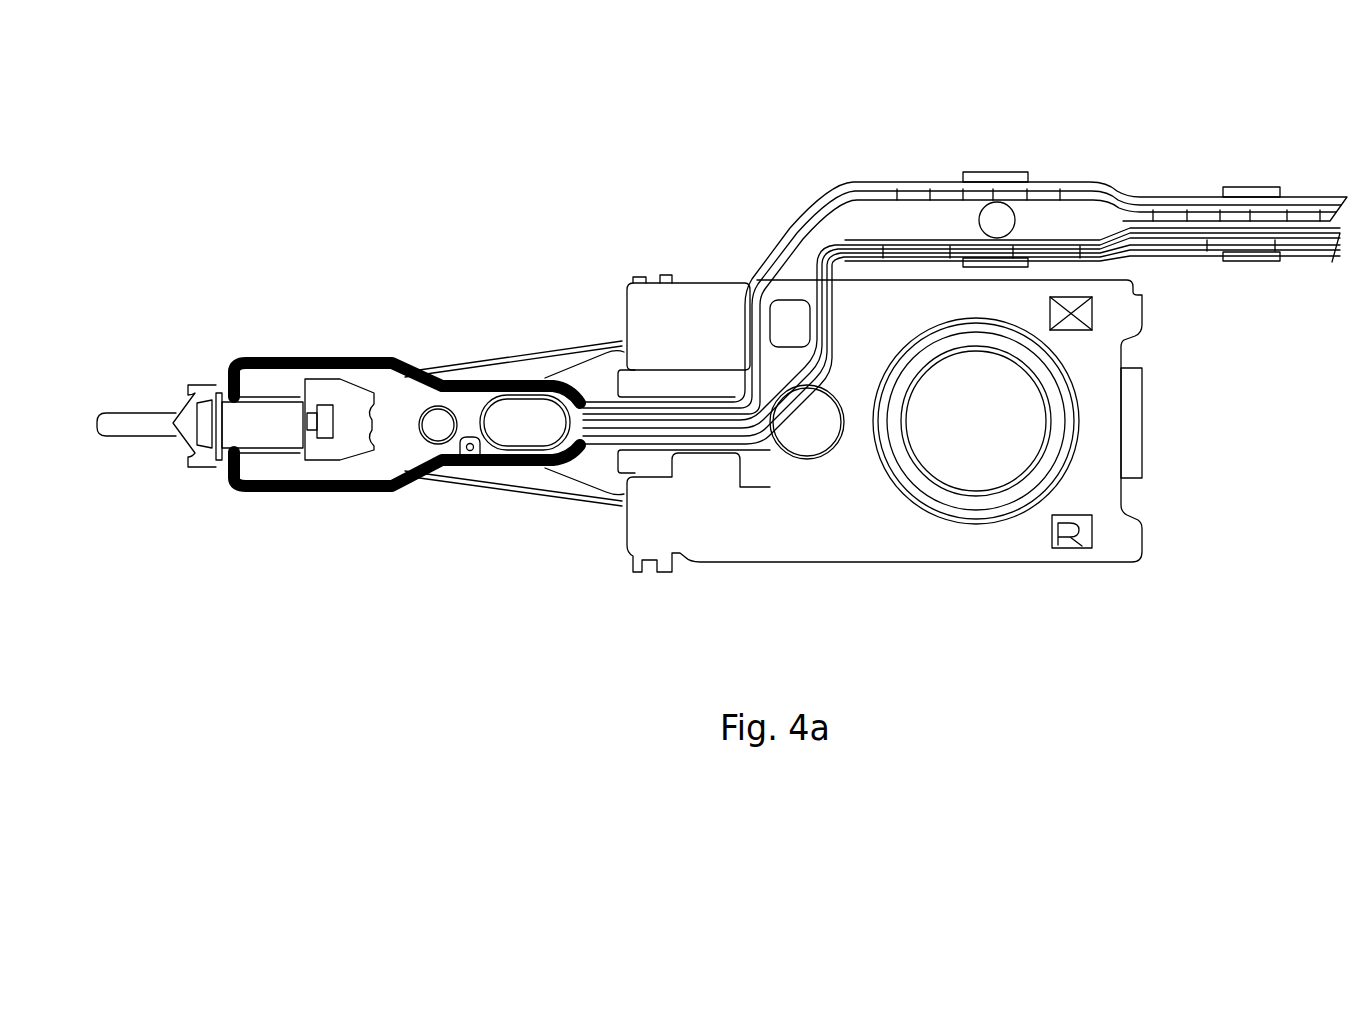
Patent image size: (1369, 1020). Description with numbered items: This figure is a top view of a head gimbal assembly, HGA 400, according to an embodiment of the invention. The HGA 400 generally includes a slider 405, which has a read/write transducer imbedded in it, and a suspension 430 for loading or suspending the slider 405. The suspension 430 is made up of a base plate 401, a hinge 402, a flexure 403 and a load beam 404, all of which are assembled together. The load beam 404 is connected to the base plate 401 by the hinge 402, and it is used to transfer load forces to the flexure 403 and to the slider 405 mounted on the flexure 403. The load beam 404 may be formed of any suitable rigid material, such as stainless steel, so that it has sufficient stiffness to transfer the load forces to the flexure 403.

The HGA 400 is at (133, 93).
The base plate 401 is at (1027, 535).
The hinge 402 is at (658, 318).
The flexure 403 is at (900, 212).
The load beam 404 is at (139, 422).
The slider 405 is at (240, 420).
The suspension 430 is at (400, 505).